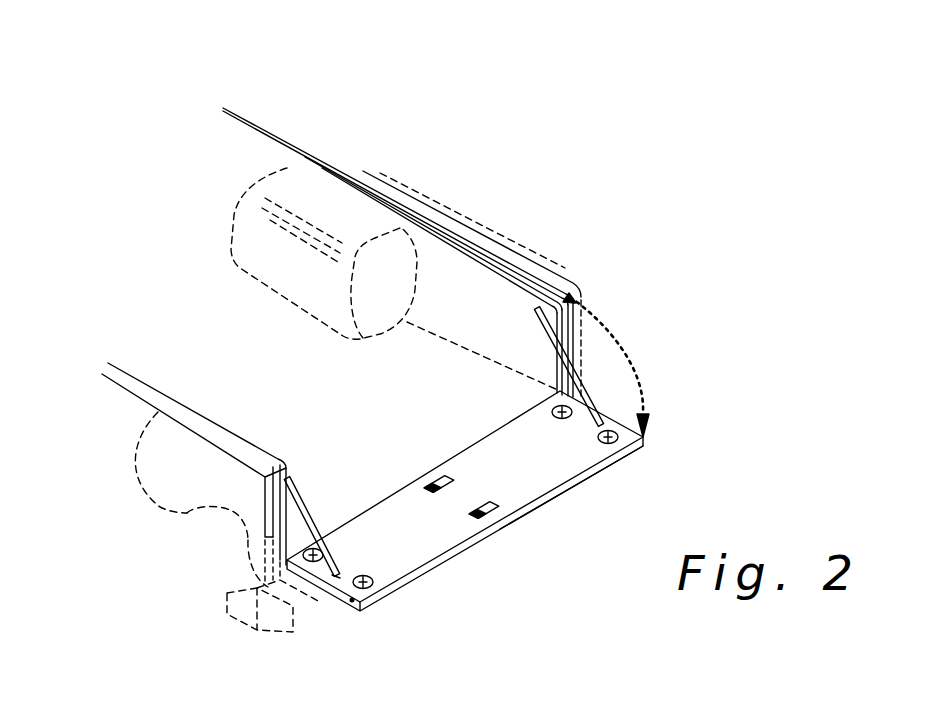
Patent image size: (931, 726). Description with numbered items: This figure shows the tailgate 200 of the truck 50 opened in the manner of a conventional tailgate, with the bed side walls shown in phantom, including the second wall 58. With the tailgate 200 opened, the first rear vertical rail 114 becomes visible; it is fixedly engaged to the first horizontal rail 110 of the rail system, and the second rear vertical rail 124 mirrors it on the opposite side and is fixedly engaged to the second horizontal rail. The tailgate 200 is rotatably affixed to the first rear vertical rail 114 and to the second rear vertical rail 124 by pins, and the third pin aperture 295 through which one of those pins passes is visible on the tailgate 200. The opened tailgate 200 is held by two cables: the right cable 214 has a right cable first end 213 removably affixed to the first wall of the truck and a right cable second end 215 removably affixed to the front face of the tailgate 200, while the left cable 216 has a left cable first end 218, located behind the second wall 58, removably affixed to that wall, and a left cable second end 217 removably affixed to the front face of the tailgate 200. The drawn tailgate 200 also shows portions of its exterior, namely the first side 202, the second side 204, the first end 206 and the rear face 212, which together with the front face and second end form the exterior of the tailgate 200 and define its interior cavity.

The truck 50 is at (329, 133).
The second wall 58 is at (119, 488).
The first horizontal rail 110 is at (429, 211).
The first rear vertical rail 114 is at (559, 306).
The second rear vertical rail 124 is at (264, 497).
The tailgate 200 is at (693, 440).
The first side 202 is at (677, 399).
The second side 204 is at (272, 583).
The first end 206 is at (596, 468).
The rear face 212 is at (400, 553).
The right cable first end 213 is at (536, 309).
The right cable 214 is at (562, 358).
The right cable second end 215 is at (604, 423).
The left cable 216 is at (305, 500).
The left cable second end 217 is at (335, 579).
The left cable first end 218 is at (280, 453).
The third pin aperture 295 is at (354, 604).